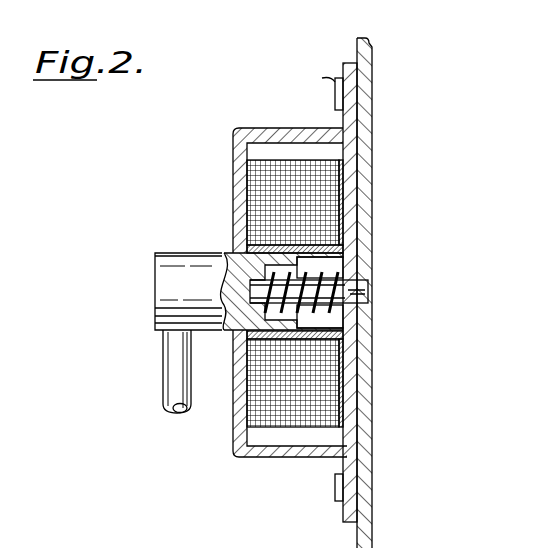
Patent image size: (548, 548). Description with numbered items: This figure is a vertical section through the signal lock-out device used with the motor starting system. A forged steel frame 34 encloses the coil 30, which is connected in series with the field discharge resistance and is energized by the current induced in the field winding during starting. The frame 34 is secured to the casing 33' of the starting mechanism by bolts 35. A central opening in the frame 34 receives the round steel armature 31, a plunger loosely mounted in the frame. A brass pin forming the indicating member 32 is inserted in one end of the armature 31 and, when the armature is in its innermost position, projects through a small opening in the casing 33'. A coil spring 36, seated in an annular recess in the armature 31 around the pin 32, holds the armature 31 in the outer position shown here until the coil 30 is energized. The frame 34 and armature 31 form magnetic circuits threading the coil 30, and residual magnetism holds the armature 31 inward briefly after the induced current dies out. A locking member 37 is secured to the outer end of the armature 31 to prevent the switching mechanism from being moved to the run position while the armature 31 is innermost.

The coil 30 is at (312, 193).
The armature 31 is at (206, 265).
The indicating member 32 is at (357, 290).
The casing 33' is at (390, 293).
The frame 34 is at (253, 127).
The bolts 35 is at (315, 269).
The coil spring 36 is at (325, 272).
The locking member 37 is at (172, 383).